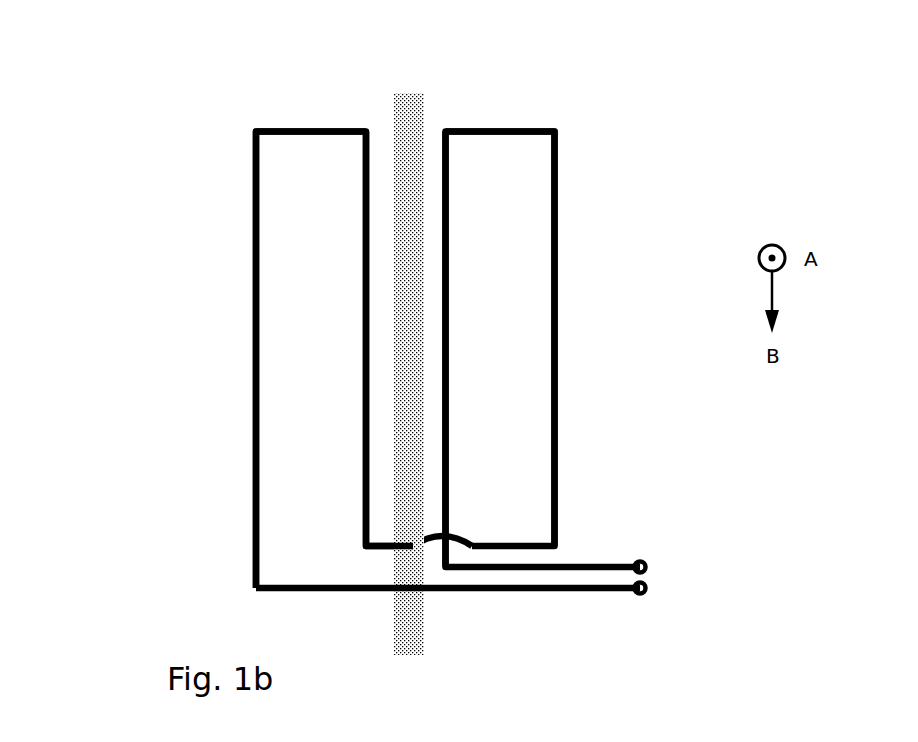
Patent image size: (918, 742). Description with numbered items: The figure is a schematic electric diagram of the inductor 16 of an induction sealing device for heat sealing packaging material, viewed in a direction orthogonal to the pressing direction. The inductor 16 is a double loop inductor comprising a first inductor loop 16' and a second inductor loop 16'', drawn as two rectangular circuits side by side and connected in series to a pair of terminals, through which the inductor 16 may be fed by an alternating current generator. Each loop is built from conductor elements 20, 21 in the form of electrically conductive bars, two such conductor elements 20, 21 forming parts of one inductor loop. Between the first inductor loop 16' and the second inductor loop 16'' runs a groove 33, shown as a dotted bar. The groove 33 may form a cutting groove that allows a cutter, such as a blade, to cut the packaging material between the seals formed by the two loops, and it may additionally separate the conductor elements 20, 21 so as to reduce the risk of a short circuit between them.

The inductor 16 is at (423, 379).
The first inductor loop 16' is at (307, 360).
The second inductor loop 16'' is at (560, 350).
The conductor element 21 is at (253, 345).
The conductor element 20 is at (363, 473).
The groove 33 is at (415, 627).